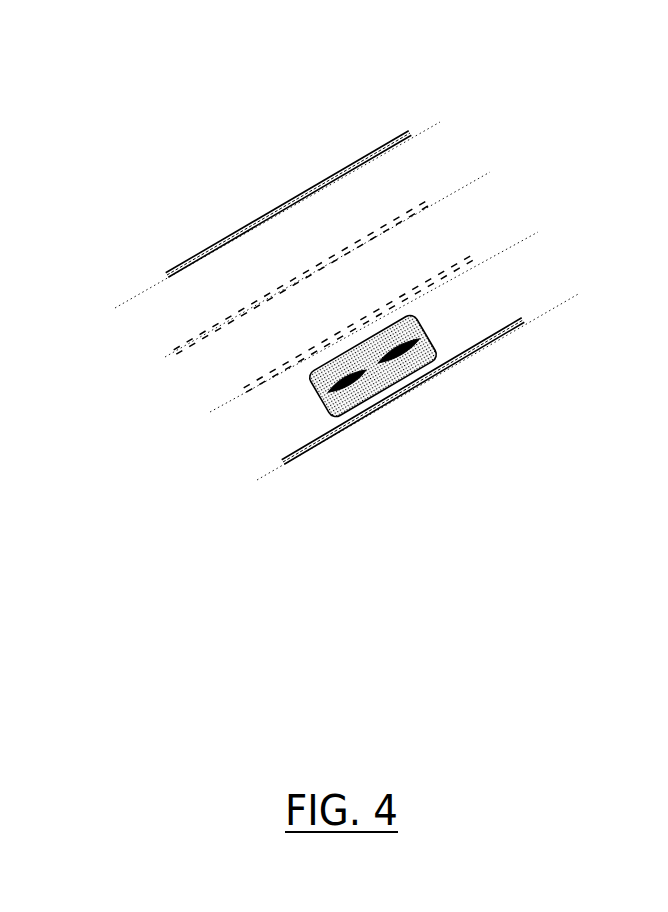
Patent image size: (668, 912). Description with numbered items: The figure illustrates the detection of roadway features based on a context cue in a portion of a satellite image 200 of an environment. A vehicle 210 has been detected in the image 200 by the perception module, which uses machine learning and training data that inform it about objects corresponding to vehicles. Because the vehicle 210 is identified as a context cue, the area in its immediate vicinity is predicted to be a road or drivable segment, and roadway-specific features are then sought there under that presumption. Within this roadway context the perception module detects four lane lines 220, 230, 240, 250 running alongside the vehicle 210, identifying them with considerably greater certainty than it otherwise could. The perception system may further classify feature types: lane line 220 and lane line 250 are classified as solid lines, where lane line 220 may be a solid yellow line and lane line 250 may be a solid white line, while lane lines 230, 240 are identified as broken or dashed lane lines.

The satellite image 200 is at (540, 72).
The vehicle 210 is at (382, 393).
The lane line 220 is at (253, 222).
The lane line 230 is at (208, 330).
The lane line 240 is at (247, 388).
The lane line 250 is at (303, 450).